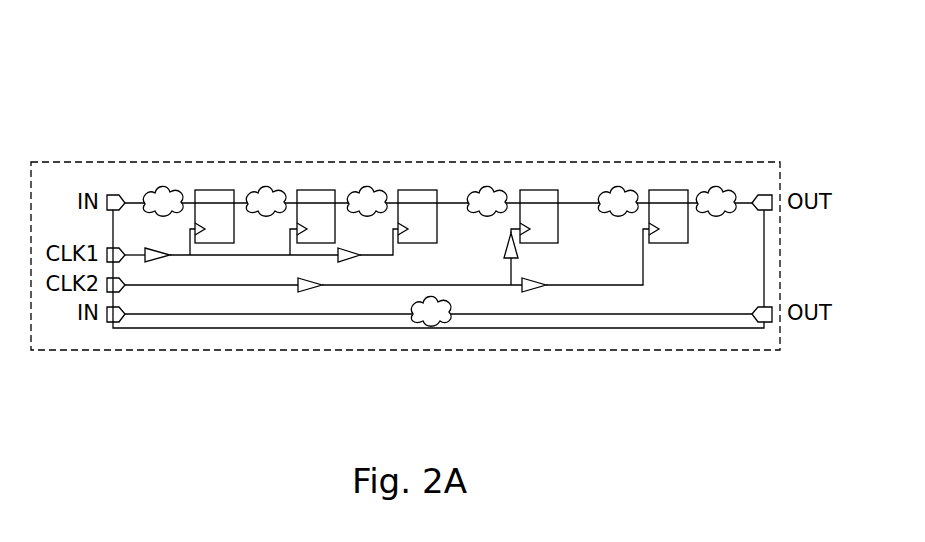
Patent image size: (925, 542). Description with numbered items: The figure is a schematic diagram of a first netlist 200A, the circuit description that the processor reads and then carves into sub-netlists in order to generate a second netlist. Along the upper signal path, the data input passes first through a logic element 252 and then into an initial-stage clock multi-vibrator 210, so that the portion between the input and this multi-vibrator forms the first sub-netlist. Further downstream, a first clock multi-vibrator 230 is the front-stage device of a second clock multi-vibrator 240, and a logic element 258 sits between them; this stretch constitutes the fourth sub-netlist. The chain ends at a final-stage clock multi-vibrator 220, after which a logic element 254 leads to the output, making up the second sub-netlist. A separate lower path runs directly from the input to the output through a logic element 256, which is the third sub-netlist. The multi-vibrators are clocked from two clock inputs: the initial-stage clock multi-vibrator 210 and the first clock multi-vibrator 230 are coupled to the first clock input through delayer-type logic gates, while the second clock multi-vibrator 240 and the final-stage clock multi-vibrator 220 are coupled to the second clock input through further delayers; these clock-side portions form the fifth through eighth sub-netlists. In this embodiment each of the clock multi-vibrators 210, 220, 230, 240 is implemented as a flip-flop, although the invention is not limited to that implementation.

The first netlist 200A is at (97, 33).
The initial-stage clock multi-vibrator 210 is at (210, 190).
The first clock multi-vibrator 230 is at (417, 190).
The second clock multi-vibrator 240 is at (540, 190).
The final-stage clock multi-vibrator 220 is at (670, 190).
The logic element 252 is at (163, 188).
The logic element 258 is at (483, 188).
The logic element 254 is at (713, 188).
The logic element 256 is at (430, 325).